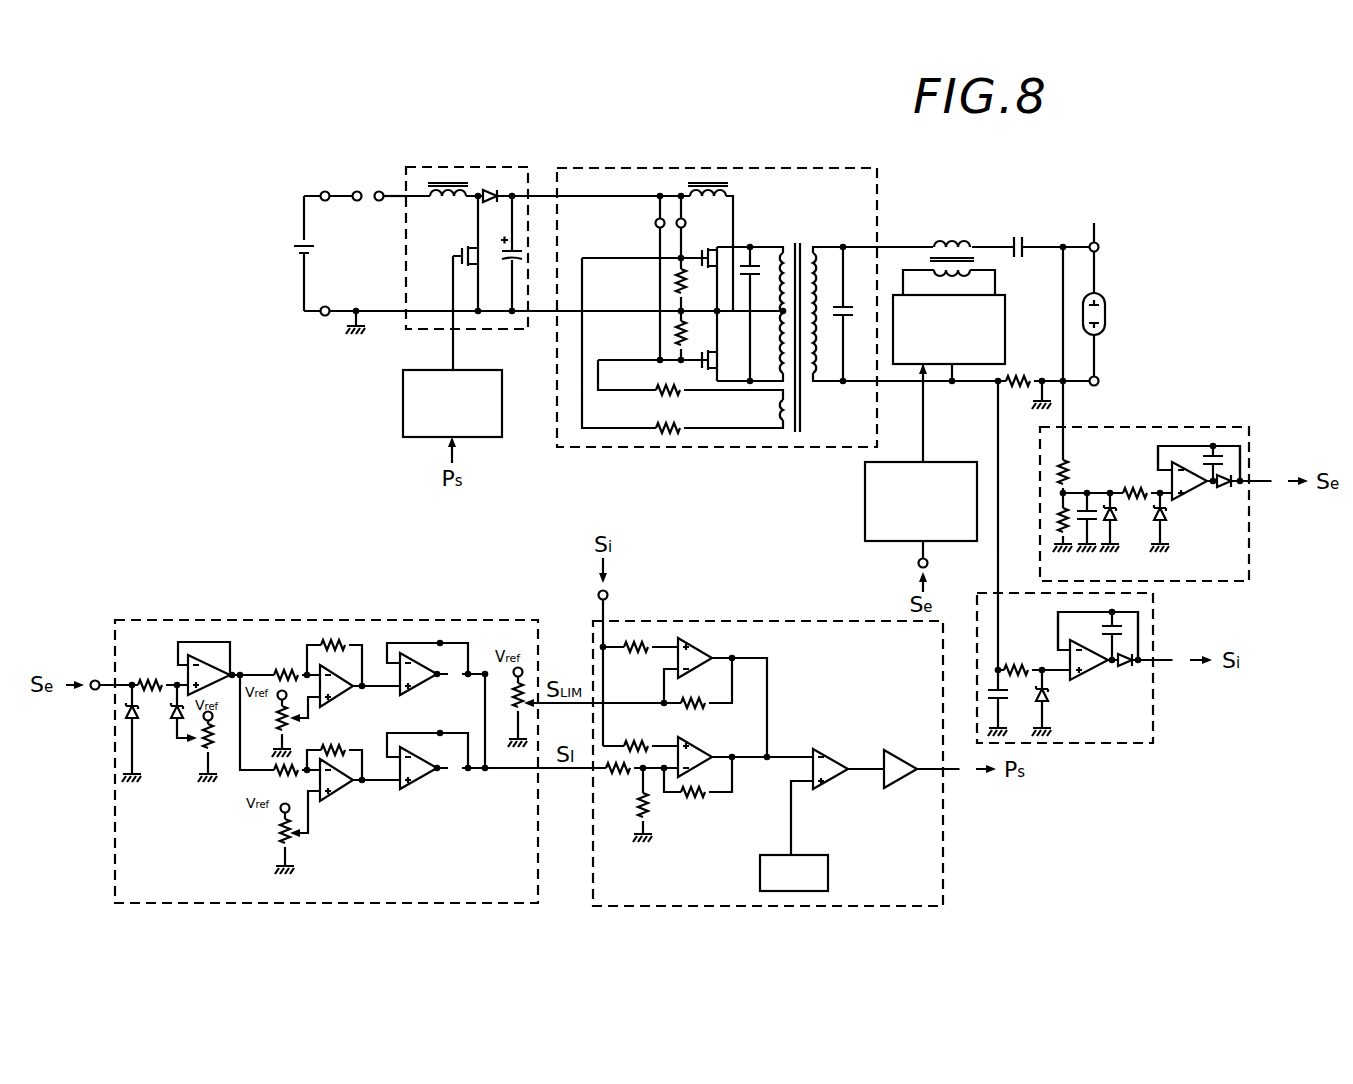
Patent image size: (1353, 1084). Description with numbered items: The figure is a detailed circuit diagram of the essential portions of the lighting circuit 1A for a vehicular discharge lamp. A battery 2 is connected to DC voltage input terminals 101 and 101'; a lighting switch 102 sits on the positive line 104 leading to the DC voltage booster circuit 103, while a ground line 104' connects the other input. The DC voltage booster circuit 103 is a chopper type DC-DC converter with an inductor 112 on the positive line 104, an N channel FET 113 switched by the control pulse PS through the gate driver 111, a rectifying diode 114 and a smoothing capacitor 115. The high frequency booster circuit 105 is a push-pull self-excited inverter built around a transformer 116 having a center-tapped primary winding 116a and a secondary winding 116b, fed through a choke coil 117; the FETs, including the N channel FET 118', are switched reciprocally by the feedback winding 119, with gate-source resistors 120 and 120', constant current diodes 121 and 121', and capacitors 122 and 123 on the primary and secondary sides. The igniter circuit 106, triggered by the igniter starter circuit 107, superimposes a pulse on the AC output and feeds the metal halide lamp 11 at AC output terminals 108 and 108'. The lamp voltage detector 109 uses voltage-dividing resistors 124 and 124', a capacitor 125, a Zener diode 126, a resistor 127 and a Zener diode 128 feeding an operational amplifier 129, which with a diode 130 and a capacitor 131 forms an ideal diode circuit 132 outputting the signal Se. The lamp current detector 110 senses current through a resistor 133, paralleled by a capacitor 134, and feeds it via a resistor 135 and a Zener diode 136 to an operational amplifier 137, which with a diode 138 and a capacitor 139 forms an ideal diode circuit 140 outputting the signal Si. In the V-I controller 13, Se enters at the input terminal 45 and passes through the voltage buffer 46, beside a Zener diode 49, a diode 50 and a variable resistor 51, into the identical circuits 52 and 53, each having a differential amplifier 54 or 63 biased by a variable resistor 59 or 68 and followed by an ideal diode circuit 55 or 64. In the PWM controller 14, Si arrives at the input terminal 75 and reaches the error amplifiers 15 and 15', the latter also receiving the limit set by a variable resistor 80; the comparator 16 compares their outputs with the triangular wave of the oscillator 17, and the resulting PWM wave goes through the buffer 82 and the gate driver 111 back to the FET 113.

The lighting circuit 1A is at (1223, 233).
The battery 2 is at (300, 246).
The metal halide lamp 11 is at (1105, 314).
The V-I controller 13 is at (478, 620).
The PWM controller 14 is at (776, 620).
The error amplifier 15 is at (700, 795).
The error amplifier 15' is at (719, 685).
The comparator 16 is at (828, 750).
The oscillator 17 is at (828, 868).
The input terminal 45 is at (95, 680).
The voltage buffer 46 is at (180, 661).
The Zener diode 49 is at (136, 726).
The diode 50 is at (177, 722).
The variable resistor 51 is at (212, 740).
The circuit 52 is at (418, 578).
The circuit 53 is at (441, 850).
The differential amplifier 54 is at (335, 642).
The ideal diode circuit 55 is at (403, 641).
The variable resistor 59 is at (280, 718).
The differential amplifier 63 is at (352, 790).
The ideal diode circuit 64 is at (426, 788).
The variable resistor 68 is at (284, 834).
The input terminal 75 is at (608, 595).
The variable resistor 80 is at (507, 708).
The buffer 82 is at (900, 778).
The DC voltage input terminal 101 is at (309, 175).
The DC voltage input terminal 101' is at (311, 335).
The lighting switch 102 is at (358, 191).
The DC voltage booster circuit 103 is at (452, 168).
The positive line 104 is at (396, 162).
The ground line 104' is at (394, 337).
The high frequency booster circuit 105 is at (685, 168).
The igniter circuit 106 is at (1001, 295).
The igniter starter circuit 107 is at (865, 510).
The AC output terminal 108 is at (1066, 227).
The AC output terminal 108' is at (1125, 365).
The lamp voltage detector 109 is at (1190, 427).
The lamp current detector 110 is at (1112, 743).
The gate driver 111 is at (502, 402).
The inductor 112 is at (446, 202).
The N channel FET 113 is at (453, 255).
The rectifying diode 114 is at (490, 203).
The smoothing capacitor 115 is at (512, 263).
The transformer 116 is at (823, 305).
The primary winding 116a is at (783, 252).
The secondary winding 116b is at (836, 236).
The choke coil 117 is at (733, 187).
The N channel FET 118' is at (683, 372).
The feedback winding 119 is at (778, 406).
The resistor 120 is at (650, 288).
The resistor 120' is at (651, 334).
The constant current diode 121 is at (632, 214).
The constant current diode 121' is at (643, 236).
The capacitor 122 is at (750, 262).
The capacitor 123 is at (849, 300).
The voltage-dividing resistor 124 is at (1084, 458).
The voltage-dividing resistor 124' is at (1085, 504).
The capacitor 125 is at (1089, 530).
The Zener diode 126 is at (1113, 514).
The resistor 127 is at (1130, 490).
The Zener diode 128 is at (1165, 514).
The operational amplifier 129 is at (1190, 496).
The diode 130 is at (1230, 478).
The capacitor 131 is at (1218, 446).
The ideal diode circuit 132 is at (1176, 442).
The resistor 133 is at (1020, 378).
The capacitor 134 is at (1002, 700).
The resistor 135 is at (1018, 667).
The Zener diode 136 is at (1044, 700).
The operational amplifier 137 is at (1085, 690).
The diode 138 is at (1122, 666).
The capacitor 139 is at (1109, 635).
The ideal diode circuit 140 is at (1138, 632).